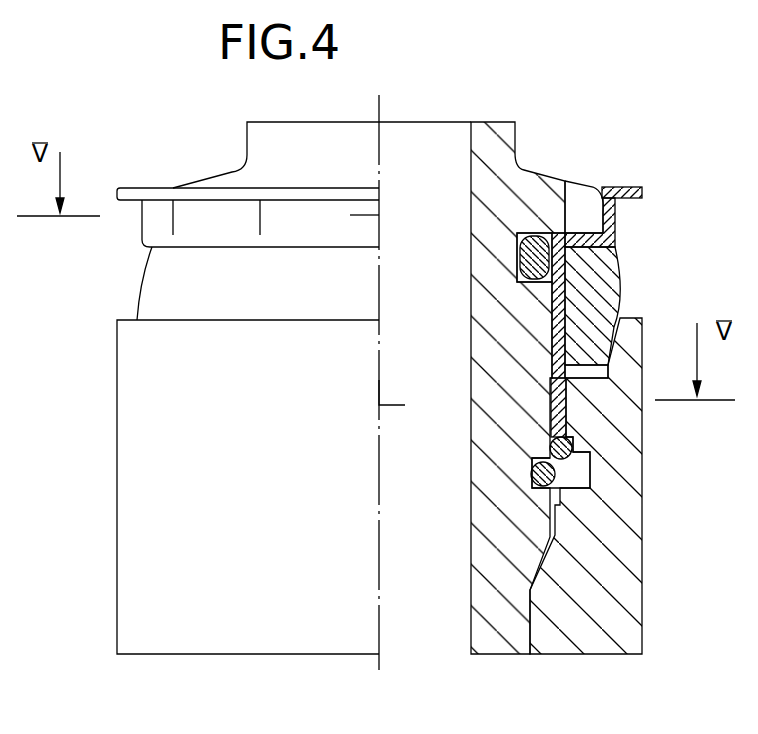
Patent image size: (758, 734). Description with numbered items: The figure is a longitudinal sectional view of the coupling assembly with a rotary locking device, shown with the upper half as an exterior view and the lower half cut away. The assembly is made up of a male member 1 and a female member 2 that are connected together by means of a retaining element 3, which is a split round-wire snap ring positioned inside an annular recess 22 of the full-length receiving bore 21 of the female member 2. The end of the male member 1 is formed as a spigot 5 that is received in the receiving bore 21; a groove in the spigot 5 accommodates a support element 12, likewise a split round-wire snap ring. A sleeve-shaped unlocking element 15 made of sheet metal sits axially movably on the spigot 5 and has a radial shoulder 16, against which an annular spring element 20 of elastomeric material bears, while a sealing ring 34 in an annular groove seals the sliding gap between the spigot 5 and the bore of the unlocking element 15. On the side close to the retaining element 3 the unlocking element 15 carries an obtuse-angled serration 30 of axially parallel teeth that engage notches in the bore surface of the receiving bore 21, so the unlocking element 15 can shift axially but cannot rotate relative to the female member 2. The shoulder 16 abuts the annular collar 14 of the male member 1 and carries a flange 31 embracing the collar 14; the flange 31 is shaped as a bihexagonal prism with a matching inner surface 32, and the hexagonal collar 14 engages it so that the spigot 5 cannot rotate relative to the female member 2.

The male member 1 is at (238, 133).
The female member 2 is at (135, 380).
The retaining element 3 is at (588, 455).
The spigot 5 is at (493, 630).
The support element 12 is at (533, 478).
The annular collar 14 is at (583, 192).
The unlocking element 15 is at (555, 322).
The radial shoulder 16 is at (565, 233).
The annular spring element 20 is at (158, 285).
The receiving bore 21 is at (538, 593).
The annular recess 22 is at (578, 478).
The serration 30 is at (567, 408).
The flange 31 is at (618, 216).
The inner surface 32 is at (599, 191).
The sealing ring 34 is at (517, 252).